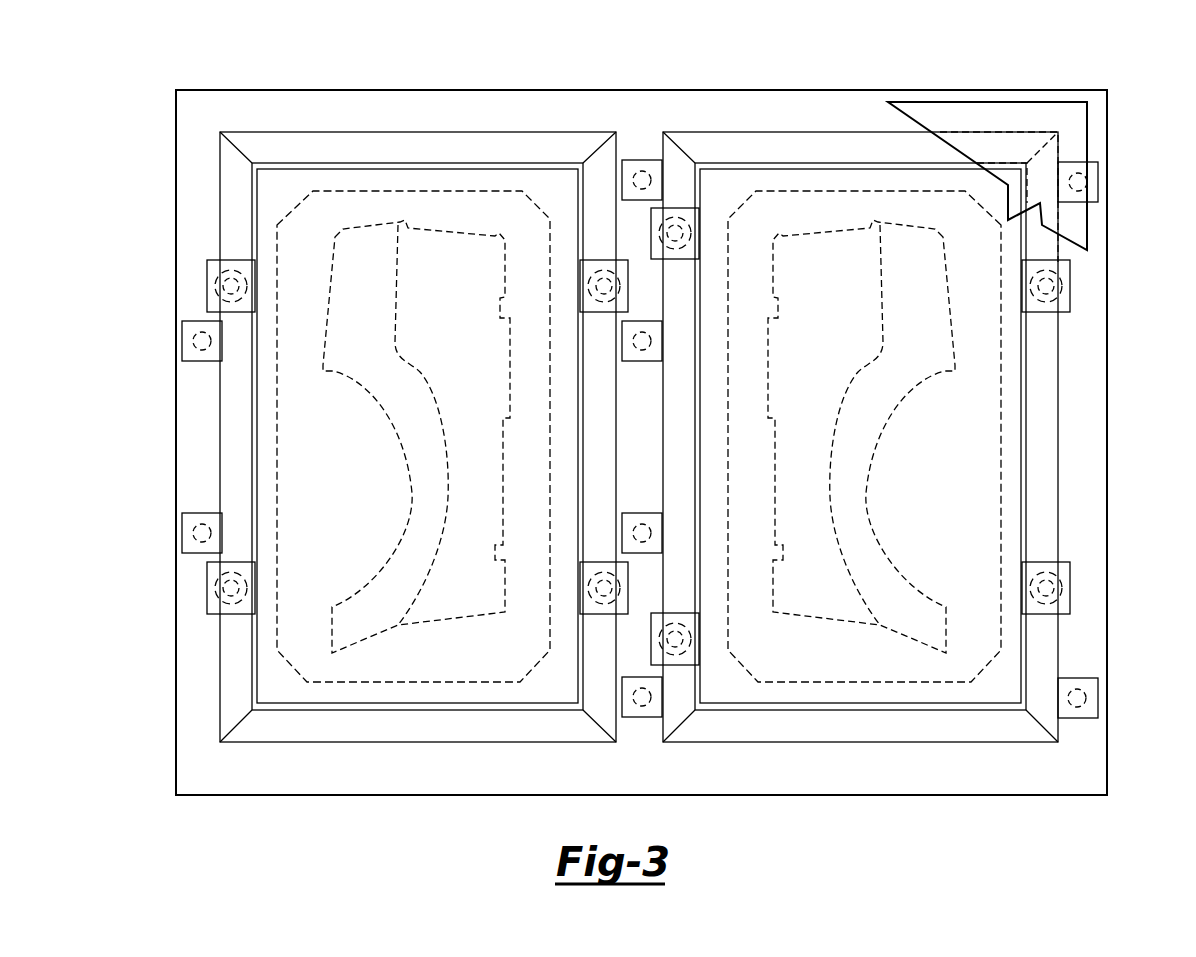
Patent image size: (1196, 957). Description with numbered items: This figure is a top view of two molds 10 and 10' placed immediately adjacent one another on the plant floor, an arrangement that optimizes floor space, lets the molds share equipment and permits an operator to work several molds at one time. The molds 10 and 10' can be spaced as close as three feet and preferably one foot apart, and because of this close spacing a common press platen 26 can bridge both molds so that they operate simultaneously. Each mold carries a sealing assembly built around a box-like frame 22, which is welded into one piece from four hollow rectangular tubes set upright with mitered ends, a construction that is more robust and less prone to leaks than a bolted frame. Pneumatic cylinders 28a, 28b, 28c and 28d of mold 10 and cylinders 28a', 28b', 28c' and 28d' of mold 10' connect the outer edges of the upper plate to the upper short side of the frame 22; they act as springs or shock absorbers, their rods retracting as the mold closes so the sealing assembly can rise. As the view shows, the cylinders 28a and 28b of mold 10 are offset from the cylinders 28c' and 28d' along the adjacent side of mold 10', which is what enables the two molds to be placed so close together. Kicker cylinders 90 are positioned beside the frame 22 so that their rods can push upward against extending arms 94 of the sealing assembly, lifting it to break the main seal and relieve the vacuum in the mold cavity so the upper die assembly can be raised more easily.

The mold 10 is at (860, 391).
The mold 10' is at (418, 388).
The frame 22 is at (868, 722).
The press platen 26 is at (990, 113).
The pneumatic cylinder 28a is at (682, 159).
The pneumatic cylinder 28b is at (739, 651).
The pneumatic cylinder 28c is at (1106, 588).
The pneumatic cylinder 28d is at (1109, 300).
The pneumatic cylinder 28a' is at (179, 233).
The pneumatic cylinder 28b' is at (179, 548).
The pneumatic cylinder 28c' is at (545, 560).
The pneumatic cylinder 28d' is at (545, 286).
The kicker cylinder 90 is at (1083, 192).
The extending arm 94 is at (1097, 175).